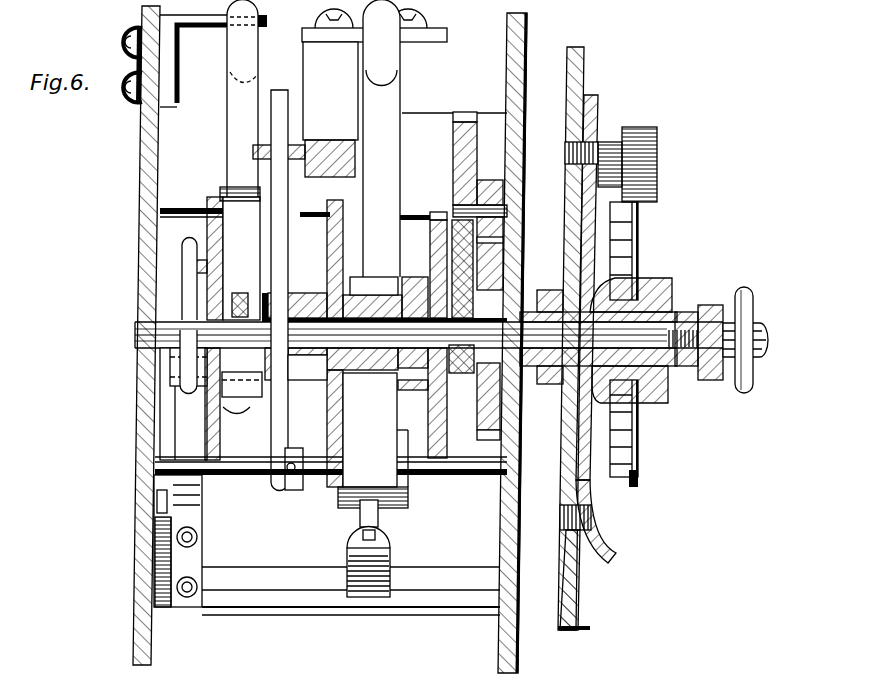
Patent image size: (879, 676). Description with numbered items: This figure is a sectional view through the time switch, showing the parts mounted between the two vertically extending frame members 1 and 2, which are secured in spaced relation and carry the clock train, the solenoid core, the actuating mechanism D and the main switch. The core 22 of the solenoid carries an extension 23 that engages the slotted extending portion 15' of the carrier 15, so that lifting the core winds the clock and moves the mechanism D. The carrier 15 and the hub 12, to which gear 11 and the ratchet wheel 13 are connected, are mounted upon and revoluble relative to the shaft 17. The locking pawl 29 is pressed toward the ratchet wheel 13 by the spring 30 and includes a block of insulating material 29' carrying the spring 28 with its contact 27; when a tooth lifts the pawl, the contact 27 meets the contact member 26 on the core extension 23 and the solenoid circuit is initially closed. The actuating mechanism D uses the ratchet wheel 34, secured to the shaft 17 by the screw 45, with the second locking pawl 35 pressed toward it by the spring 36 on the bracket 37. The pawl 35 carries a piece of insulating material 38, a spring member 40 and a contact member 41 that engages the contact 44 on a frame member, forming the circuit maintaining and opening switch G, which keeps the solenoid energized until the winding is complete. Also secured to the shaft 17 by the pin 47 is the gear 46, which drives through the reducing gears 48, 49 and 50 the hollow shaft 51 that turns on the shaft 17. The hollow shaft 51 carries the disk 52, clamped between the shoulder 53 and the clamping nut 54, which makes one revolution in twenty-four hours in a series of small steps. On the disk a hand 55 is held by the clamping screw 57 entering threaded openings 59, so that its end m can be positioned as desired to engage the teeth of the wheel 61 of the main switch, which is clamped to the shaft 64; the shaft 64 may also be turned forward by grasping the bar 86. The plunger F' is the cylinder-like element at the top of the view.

The frame member 1 is at (513, 652).
The frame member 2 is at (143, 505).
The gear 11 is at (451, 443).
The hub 12 is at (410, 370).
The ratchet wheel 13 is at (330, 237).
The carrier 15 is at (306, 422).
The extending portion 15' is at (279, 270).
The shaft 17 is at (160, 372).
The core 22 is at (355, 167).
The extension 23 is at (238, 130).
The contact member 26 is at (447, 38).
The contact 27 is at (395, 67).
The spring 28 is at (393, 102).
The locking pawl 29 is at (384, 373).
The block of insulating material 29' is at (373, 440).
The spring 30 is at (347, 585).
The ratchet wheel 34 is at (180, 440).
The second locking pawl 35 is at (193, 272).
The spring 36 is at (165, 477).
The bracket 37 is at (160, 566).
The piece of insulating material 38 is at (237, 221).
The spring member 40 is at (165, 141).
The contact member 41 is at (240, 86).
The contact 44 is at (203, 18).
The screw 45 is at (187, 303).
The gear 46 is at (508, 425).
The pin 47 is at (495, 300).
The gear 48 is at (453, 148).
The gear 49 is at (498, 191).
The gear 50 is at (482, 237).
The hollow shaft 51 is at (674, 285).
The disk 52 is at (592, 560).
The shoulder 53 is at (552, 387).
The clamping nut 54 is at (648, 403).
The hand 55 is at (603, 278).
The clamping screw 57 is at (658, 150).
The threaded openings 59 is at (560, 520).
The wheel 61 is at (639, 472).
The shaft 64 is at (750, 382).
The bar 86 is at (747, 287).
The actuating mechanism D is at (226, 425).
The circuit maintaining and opening switch G is at (224, 64).
The cylinder F' is at (418, 67).
The end of hand m is at (613, 552).